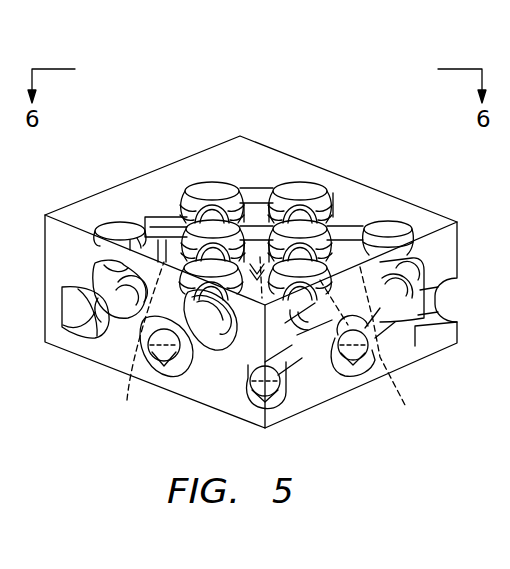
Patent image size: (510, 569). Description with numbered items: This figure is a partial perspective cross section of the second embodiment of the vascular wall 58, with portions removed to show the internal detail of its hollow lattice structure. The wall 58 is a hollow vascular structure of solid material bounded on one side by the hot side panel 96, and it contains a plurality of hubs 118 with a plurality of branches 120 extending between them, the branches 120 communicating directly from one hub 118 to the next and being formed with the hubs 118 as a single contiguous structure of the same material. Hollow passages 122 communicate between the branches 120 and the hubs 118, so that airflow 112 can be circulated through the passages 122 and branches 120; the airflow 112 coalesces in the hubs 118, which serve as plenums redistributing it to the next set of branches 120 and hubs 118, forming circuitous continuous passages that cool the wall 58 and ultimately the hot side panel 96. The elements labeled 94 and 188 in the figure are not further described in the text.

The vascular wall 58 is at (305, 100).
The hot side panel 96 is at (106, 200).
The side face 94 is at (100, 366).
The airflow 112 is at (166, 240).
The branches 120 is at (240, 187).
The hubs 118 is at (355, 230).
The node 188 is at (214, 244).
The hollow passages 122 is at (263, 212).